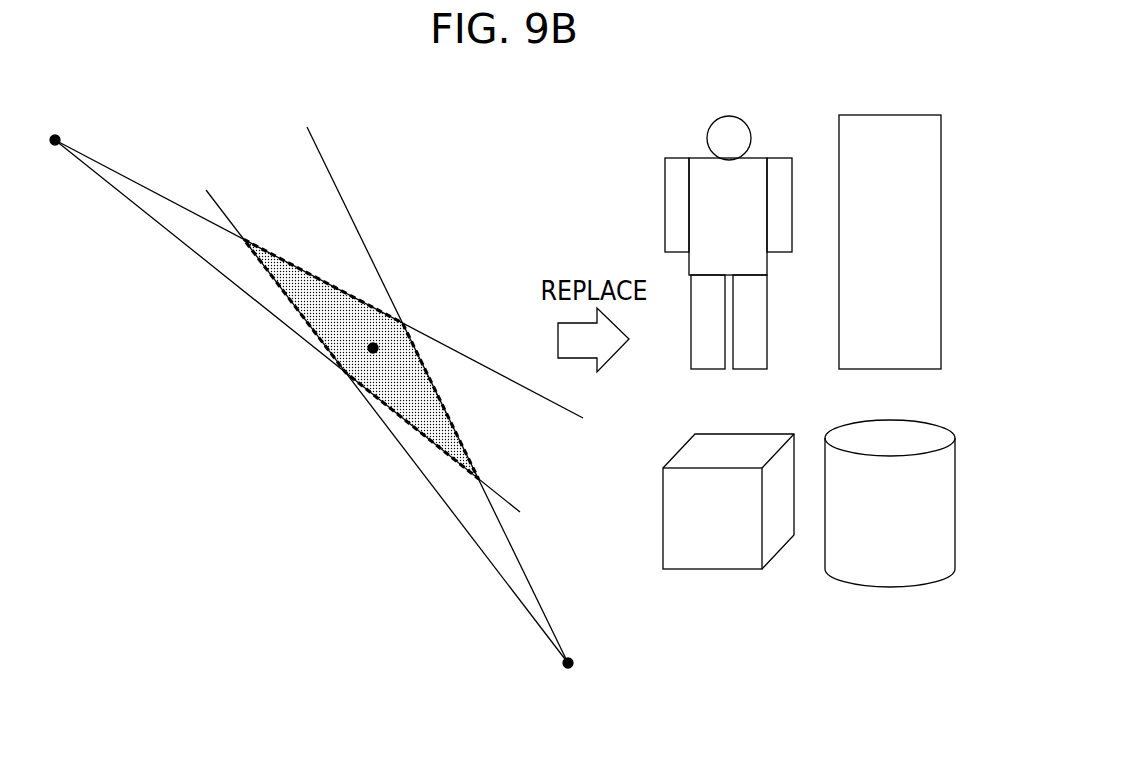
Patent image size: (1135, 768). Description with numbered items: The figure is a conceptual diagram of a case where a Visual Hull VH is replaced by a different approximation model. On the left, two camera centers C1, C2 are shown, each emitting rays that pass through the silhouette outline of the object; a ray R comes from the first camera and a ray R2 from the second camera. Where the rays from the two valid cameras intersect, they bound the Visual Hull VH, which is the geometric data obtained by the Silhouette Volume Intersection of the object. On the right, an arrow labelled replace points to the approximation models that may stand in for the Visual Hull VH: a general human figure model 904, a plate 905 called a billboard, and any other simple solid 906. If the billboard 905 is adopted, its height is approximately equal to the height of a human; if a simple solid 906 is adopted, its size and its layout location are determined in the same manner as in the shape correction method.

The camera center C1 is at (580, 663).
The camera center C2 is at (60, 140).
The ray passing through a silhouette outline R is at (508, 539).
The ray passing through a silhouette outline R2 is at (150, 188).
The Visual Hull VH is at (322, 272).
The general human figure model 904 is at (729, 115).
The plate called a billboard 905 is at (889, 115).
The simple solid 906 is at (729, 570).